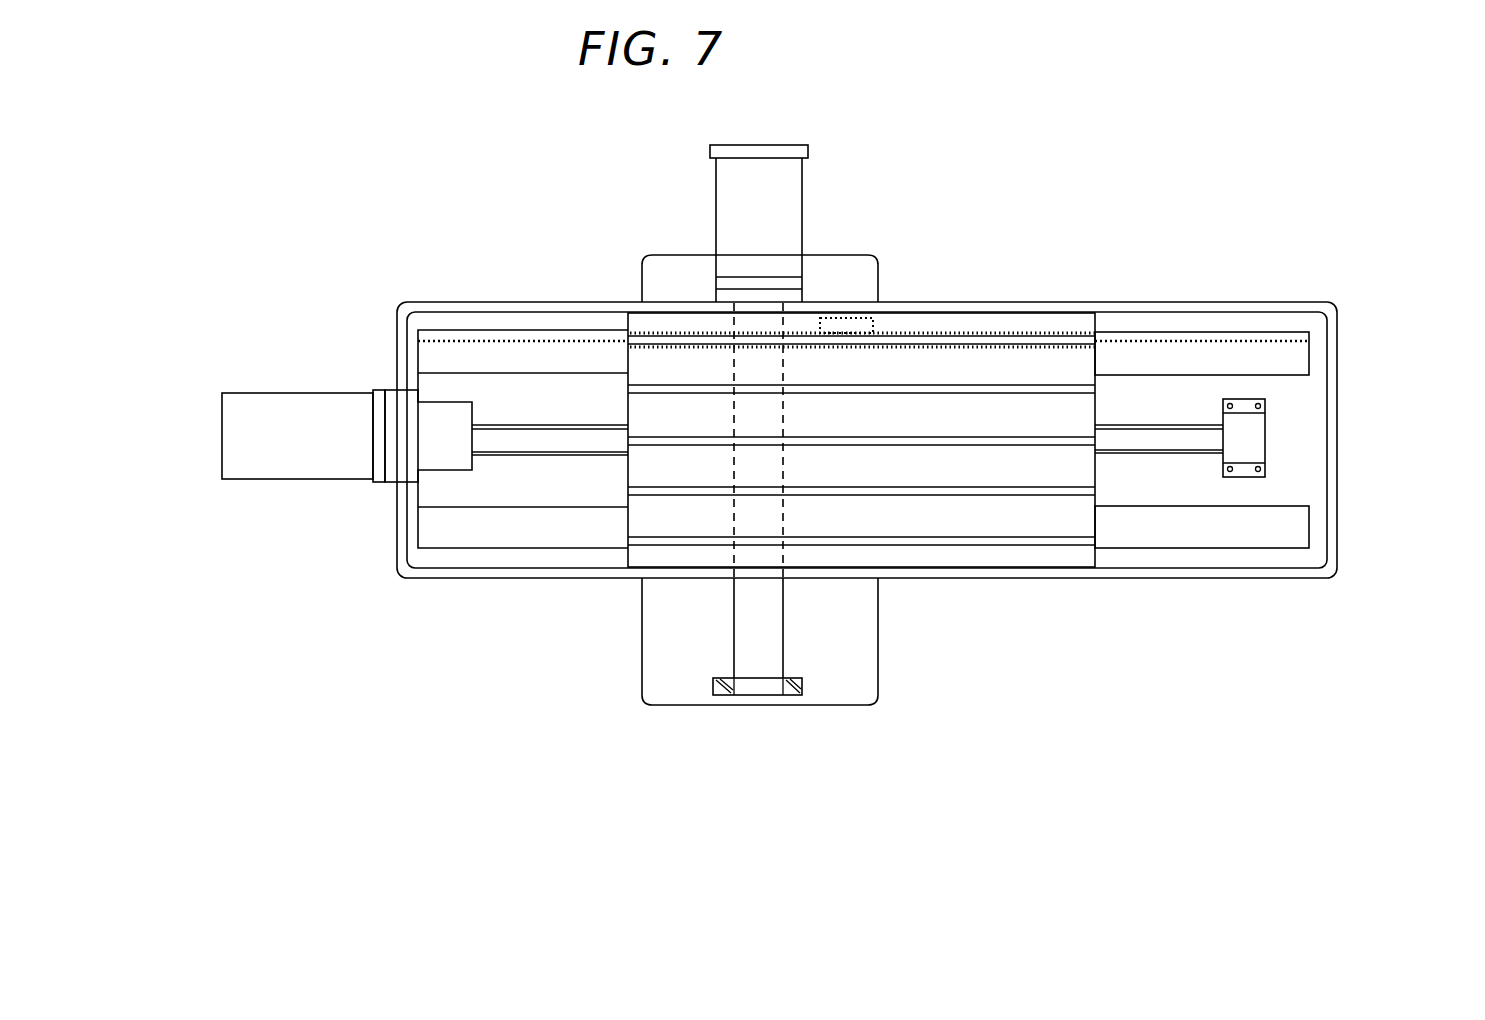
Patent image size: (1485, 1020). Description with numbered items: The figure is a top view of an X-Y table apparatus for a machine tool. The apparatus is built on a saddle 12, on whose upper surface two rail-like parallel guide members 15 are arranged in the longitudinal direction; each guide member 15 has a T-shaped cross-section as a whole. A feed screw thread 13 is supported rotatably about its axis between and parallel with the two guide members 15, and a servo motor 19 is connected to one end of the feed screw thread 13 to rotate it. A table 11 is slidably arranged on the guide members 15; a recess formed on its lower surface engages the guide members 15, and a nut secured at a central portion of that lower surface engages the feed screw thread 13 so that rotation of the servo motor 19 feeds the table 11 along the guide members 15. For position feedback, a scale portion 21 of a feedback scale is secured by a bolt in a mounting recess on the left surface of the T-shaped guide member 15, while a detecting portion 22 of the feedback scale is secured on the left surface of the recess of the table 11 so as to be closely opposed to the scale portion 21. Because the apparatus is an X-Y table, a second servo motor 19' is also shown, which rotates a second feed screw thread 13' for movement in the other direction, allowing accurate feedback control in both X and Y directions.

The table 11 is at (727, 363).
The saddle 12 is at (1293, 444).
The feed screw thread 13 is at (523, 364).
The second feed screw thread 13' is at (811, 665).
The guide member 15 is at (1240, 360).
The servo motor 19 is at (320, 343).
The second servo motor 19' is at (795, 216).
The scale portion 21 is at (454, 336).
The detecting portion 22 is at (847, 310).